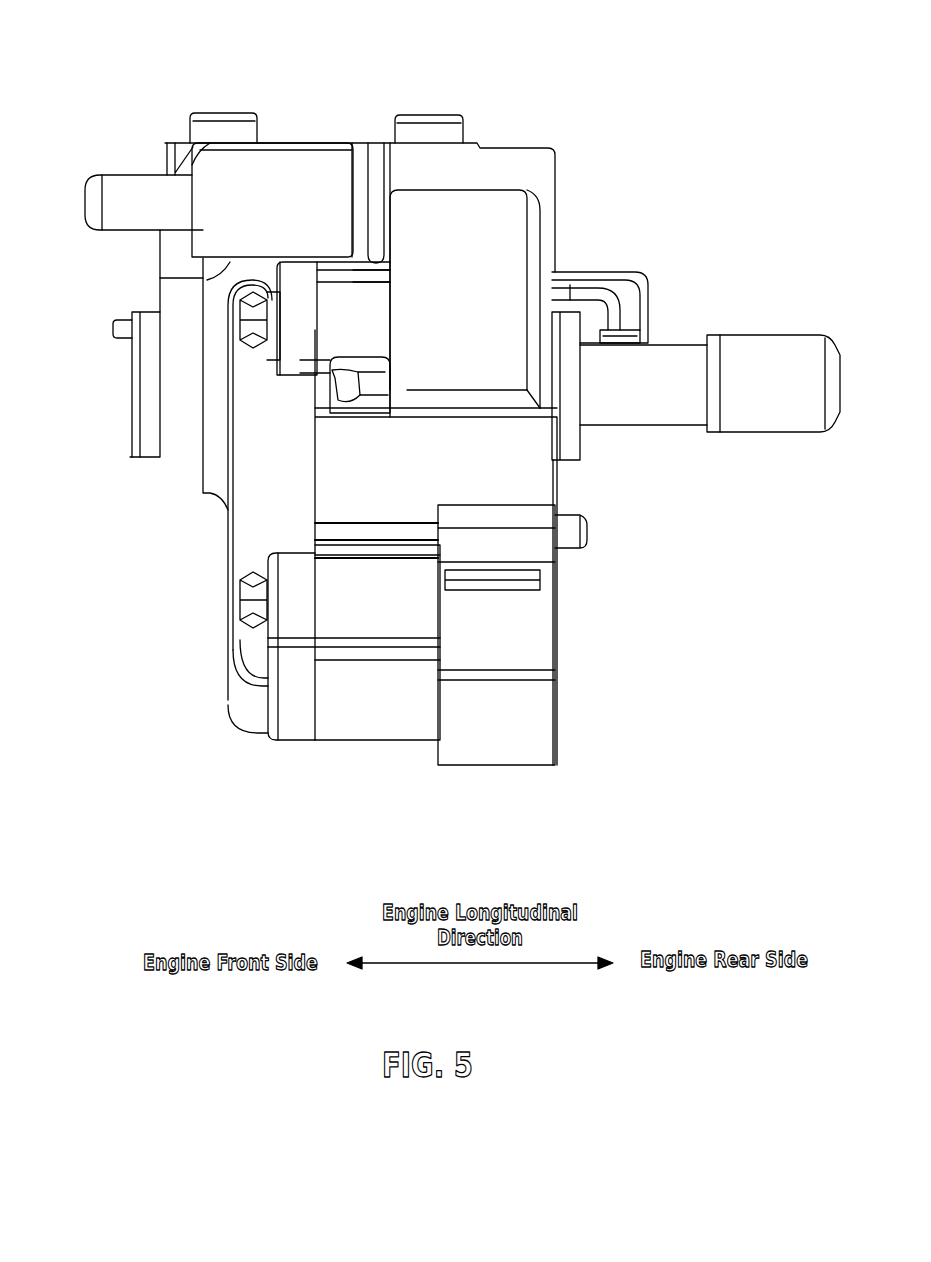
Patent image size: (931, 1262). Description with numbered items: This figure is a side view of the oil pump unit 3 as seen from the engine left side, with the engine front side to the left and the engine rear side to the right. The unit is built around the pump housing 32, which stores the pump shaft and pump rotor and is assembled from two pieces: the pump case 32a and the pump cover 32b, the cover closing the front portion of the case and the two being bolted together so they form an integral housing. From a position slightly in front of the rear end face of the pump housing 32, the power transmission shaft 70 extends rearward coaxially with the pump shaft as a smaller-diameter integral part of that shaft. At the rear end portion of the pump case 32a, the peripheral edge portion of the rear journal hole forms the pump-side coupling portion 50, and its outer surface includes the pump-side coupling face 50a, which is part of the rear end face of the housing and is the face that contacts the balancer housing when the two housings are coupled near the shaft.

The oil pump unit 3 is at (117, 66).
The pump housing 32 is at (353, 696).
The pump case 32a is at (377, 675).
The pump cover 32b is at (298, 742).
The pump-side coupling portion 50 is at (572, 470).
The pump-side coupling face 50a is at (618, 328).
The power transmission shaft 70 is at (663, 427).